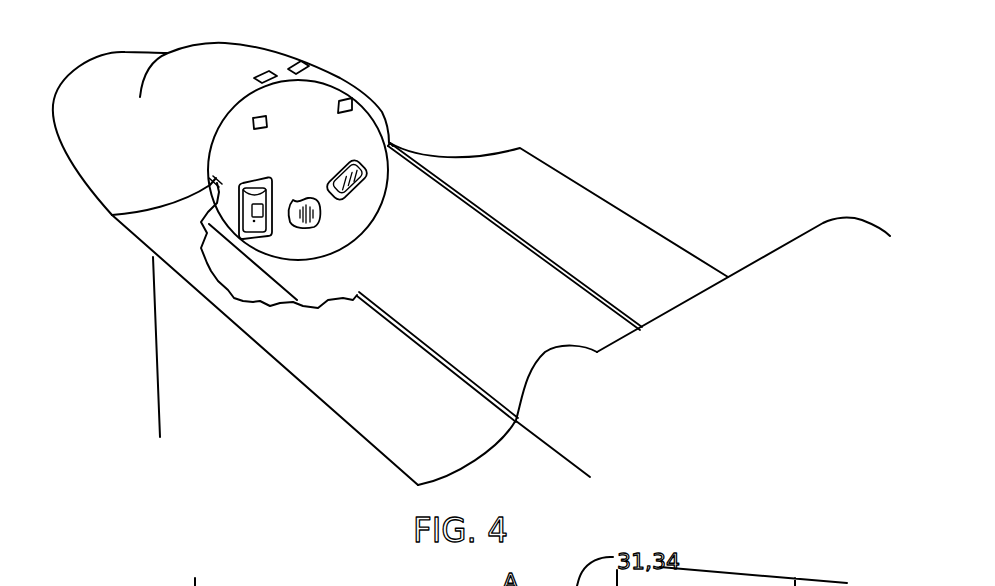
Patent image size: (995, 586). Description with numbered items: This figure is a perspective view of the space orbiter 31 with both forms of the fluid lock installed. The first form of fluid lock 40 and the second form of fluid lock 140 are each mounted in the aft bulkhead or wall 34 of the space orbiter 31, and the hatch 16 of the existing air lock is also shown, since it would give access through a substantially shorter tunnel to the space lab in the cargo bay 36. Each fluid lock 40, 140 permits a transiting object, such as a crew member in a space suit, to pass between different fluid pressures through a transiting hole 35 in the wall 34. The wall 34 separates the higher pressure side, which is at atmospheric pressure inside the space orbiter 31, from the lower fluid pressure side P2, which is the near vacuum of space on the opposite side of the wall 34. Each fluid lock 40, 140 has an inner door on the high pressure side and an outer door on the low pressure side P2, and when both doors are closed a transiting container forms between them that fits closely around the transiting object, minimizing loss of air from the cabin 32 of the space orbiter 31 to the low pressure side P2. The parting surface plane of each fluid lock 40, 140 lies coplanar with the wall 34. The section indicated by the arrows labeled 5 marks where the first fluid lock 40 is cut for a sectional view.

The space orbiter 31 is at (217, 55).
The cabin 32 is at (313, 75).
The aft bulkhead 34 is at (309, 168).
The transiting hole 35 is at (271, 180).
The cargo bay 36 is at (473, 251).
The first form of fluid lock 40 is at (273, 193).
The hatch 16 is at (296, 198).
The second form of fluid lock 140 is at (389, 123).
The lower fluid pressure side P2 is at (413, 208).
The section line 5- 5 is at (253, 190).